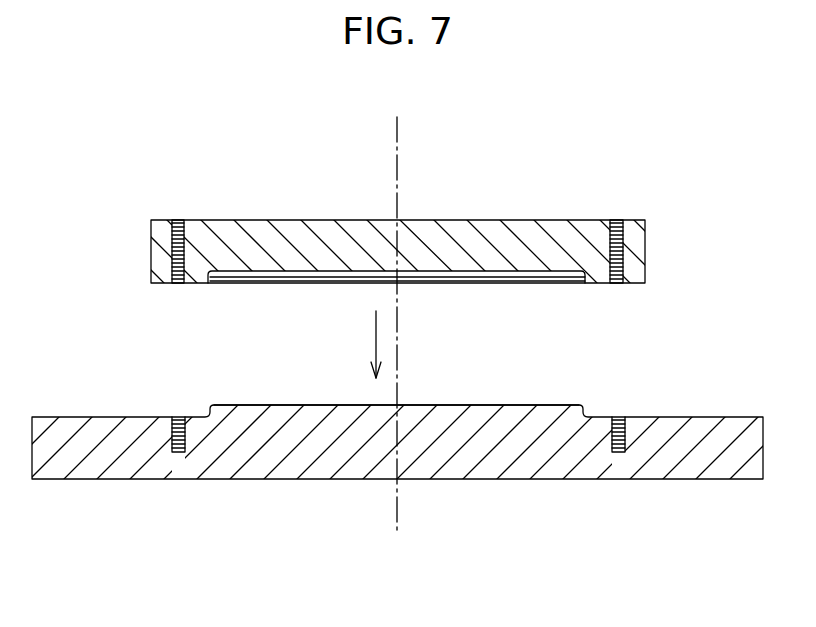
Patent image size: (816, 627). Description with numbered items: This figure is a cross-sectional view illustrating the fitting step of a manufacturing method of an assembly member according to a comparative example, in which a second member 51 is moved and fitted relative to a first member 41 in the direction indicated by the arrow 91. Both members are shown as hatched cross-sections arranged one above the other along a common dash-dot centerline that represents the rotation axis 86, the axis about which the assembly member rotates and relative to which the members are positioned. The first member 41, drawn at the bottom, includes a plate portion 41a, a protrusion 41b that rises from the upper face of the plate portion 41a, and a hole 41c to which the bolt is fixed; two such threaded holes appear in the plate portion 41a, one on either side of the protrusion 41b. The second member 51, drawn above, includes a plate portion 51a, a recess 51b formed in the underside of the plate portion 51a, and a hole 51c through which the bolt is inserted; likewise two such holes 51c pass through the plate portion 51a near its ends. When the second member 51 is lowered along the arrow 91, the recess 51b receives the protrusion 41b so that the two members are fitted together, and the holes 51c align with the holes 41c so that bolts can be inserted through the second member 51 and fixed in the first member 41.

The rotation axis 86 is at (397, 133).
The arrow 91 is at (374, 338).
The second member 51 is at (426, 193).
The plate portion 51a is at (518, 225).
The recess 51b is at (533, 270).
The hole 51c is at (630, 242).
The first member 41 is at (402, 500).
The plate portion 41a is at (643, 448).
The protrusion 41b is at (547, 412).
The hole 41c is at (626, 446).